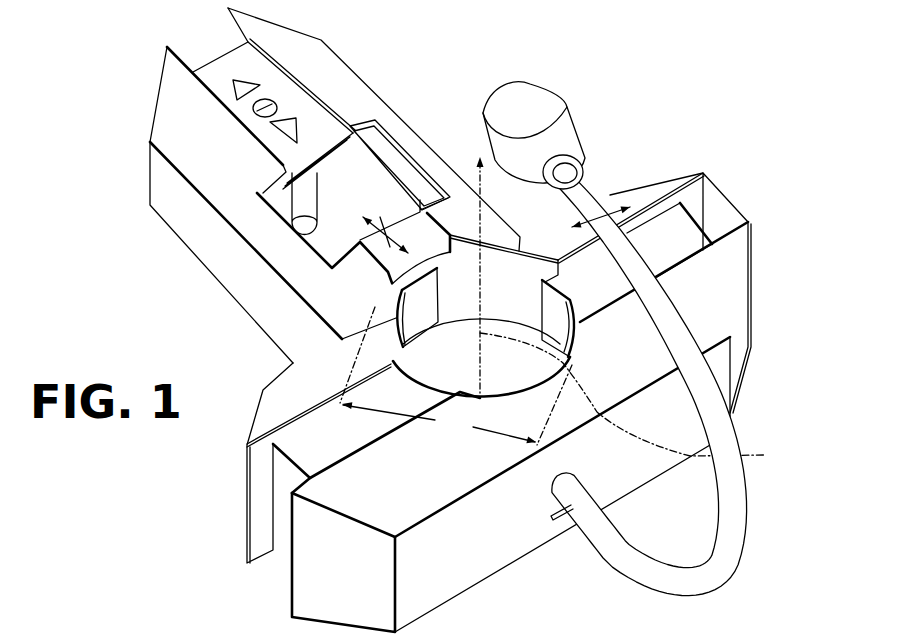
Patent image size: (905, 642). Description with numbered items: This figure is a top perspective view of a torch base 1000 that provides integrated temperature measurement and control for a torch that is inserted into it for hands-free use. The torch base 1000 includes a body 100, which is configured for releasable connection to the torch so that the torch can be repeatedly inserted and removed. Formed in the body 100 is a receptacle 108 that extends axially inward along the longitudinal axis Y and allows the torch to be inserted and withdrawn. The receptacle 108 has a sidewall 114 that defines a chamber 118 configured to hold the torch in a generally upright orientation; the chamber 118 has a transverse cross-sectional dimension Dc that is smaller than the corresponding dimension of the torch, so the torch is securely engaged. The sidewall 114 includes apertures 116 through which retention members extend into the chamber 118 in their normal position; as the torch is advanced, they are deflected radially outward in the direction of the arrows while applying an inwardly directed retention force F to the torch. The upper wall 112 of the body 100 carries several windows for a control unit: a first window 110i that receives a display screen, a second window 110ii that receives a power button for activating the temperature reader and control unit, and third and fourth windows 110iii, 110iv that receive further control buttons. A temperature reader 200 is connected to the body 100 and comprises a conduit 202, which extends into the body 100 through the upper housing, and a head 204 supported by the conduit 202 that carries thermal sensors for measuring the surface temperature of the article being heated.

The torch base 1000 is at (710, 108).
The body 100 is at (115, 45).
The receptacle 108 is at (487, 408).
The first window 110i is at (290, 242).
The second window 110ii is at (257, 112).
The third window 110iii is at (277, 139).
The fourth window 110iv is at (232, 90).
The upper wall 112 is at (340, 82).
The sidewall 114 is at (595, 197).
The apertures 116 is at (396, 307).
The chamber 118 is at (500, 370).
The temperature reader 200 is at (780, 534).
The conduit 202 is at (718, 527).
The head 204 is at (547, 97).